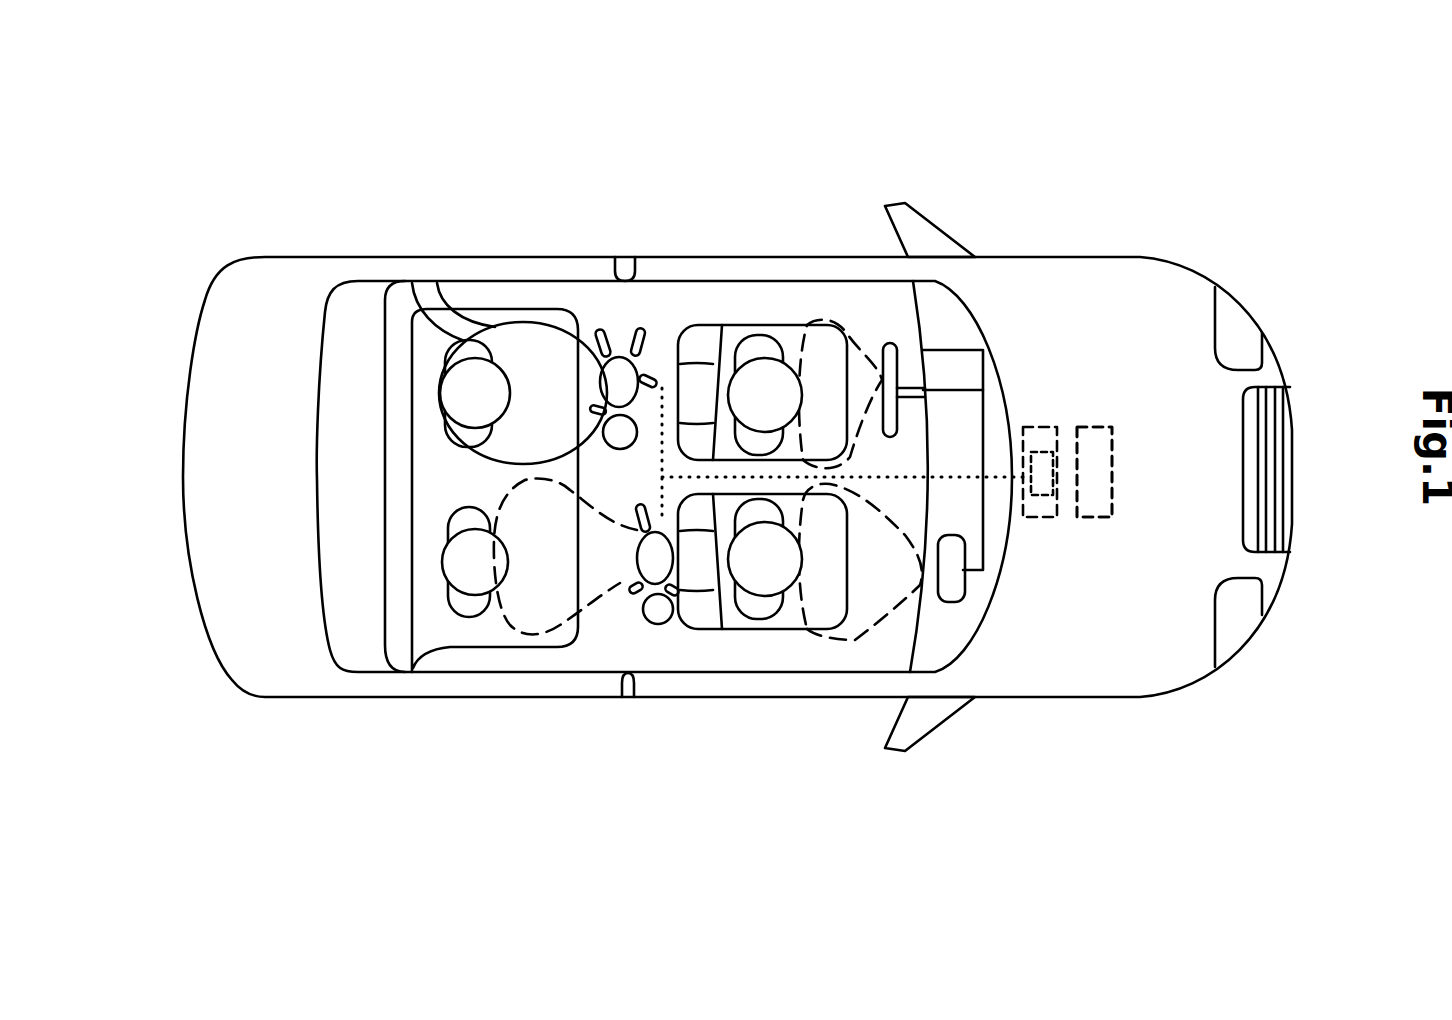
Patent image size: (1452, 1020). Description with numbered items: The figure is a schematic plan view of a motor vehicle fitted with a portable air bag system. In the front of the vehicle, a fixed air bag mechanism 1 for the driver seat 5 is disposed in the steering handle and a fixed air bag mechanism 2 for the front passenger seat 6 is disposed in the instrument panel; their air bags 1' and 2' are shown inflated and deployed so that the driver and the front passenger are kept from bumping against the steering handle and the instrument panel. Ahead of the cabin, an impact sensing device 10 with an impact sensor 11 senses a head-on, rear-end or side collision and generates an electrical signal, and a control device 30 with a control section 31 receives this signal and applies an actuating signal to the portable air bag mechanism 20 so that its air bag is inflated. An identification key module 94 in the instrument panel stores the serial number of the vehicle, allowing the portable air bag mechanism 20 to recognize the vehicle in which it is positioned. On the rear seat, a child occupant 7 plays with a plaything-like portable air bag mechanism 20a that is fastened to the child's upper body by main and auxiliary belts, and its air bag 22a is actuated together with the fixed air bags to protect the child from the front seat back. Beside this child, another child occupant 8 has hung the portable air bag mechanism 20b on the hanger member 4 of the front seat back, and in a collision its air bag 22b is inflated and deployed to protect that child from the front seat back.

The fixed air bag mechanism 1 is at (875, 303).
The air bag 1' is at (822, 299).
The fixed air bag mechanism 2 is at (897, 651).
The air bag 2' is at (842, 642).
The hanger member 4 is at (655, 748).
The driver seat 5 is at (725, 335).
The front passenger seat 6 is at (722, 748).
The child occupant 7 is at (465, 398).
The child occupant 8 is at (463, 563).
The impact sensing device 10 is at (1092, 733).
The impact sensor 11 is at (1193, 230).
The portable air bag mechanism 20 is at (632, 170).
The portable air bag mechanism 20a is at (618, 325).
The portable air bag mechanism 20b is at (637, 567).
The air bag 22a is at (513, 333).
The air bag 22b is at (517, 748).
The control device 30 is at (1018, 733).
The control section 31 is at (1038, 455).
The identification key module 94 is at (960, 367).